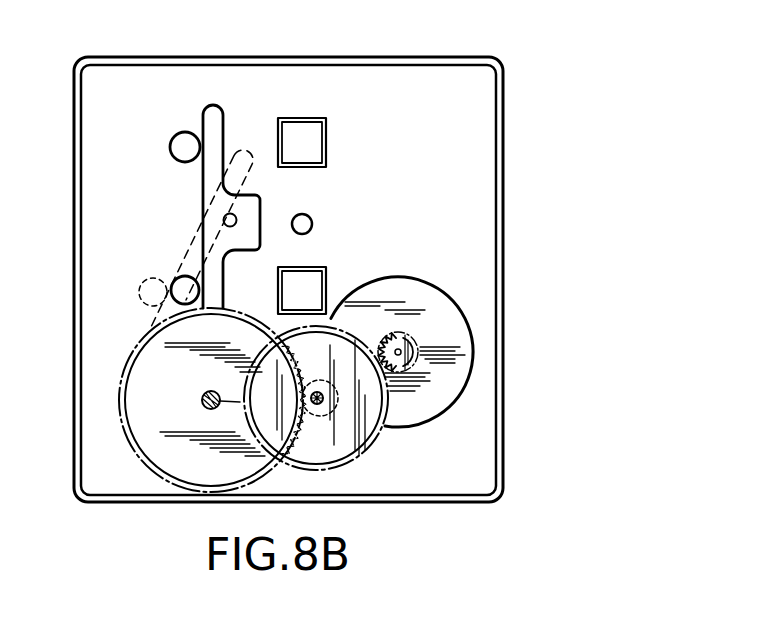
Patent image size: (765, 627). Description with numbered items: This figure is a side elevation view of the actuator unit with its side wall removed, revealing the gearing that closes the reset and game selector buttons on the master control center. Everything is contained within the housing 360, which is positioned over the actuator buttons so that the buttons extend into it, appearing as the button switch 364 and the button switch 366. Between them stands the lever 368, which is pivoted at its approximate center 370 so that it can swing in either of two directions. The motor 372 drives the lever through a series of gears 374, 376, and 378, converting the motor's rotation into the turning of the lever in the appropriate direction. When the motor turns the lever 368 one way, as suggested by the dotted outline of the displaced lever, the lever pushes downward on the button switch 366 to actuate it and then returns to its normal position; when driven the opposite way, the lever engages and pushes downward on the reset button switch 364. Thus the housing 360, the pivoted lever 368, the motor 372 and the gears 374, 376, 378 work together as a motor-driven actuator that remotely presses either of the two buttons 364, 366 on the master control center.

The housing 360 is at (513, 128).
The button switch 364 is at (170, 148).
The button switch 366 is at (176, 279).
The lever 368 is at (222, 112).
The pivot center 370 is at (236, 217).
The motor 372 is at (463, 353).
The gear 374 is at (300, 427).
The gear 376 is at (380, 388).
The gear 378 is at (382, 343).